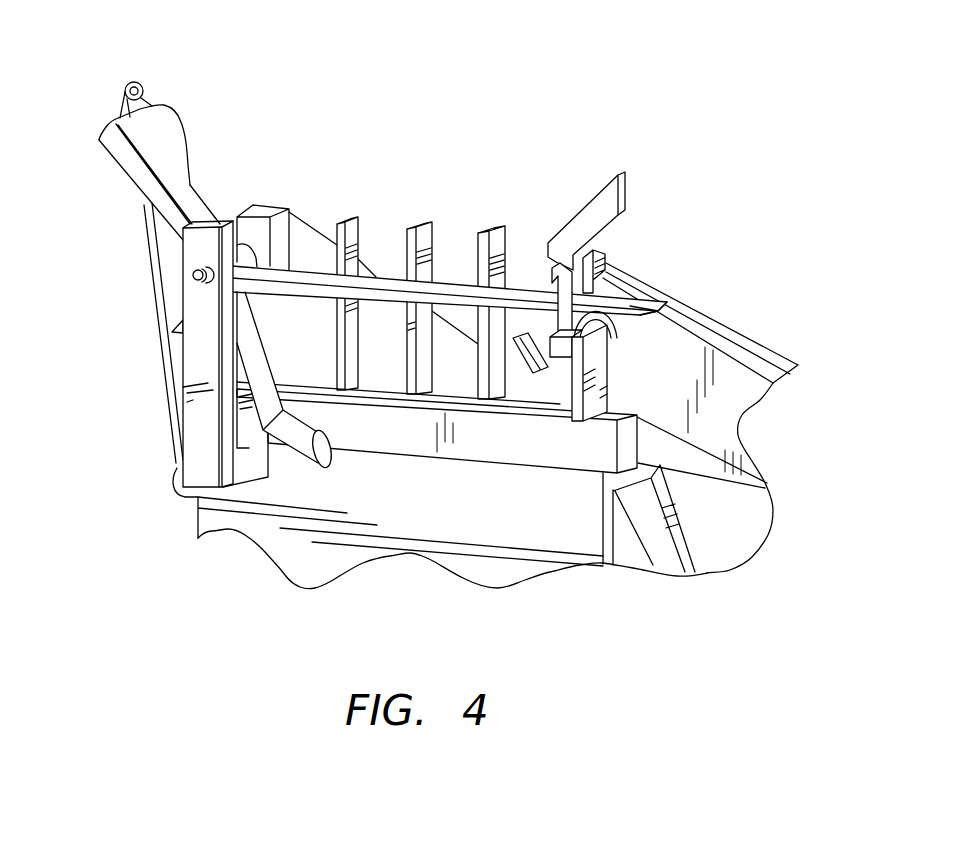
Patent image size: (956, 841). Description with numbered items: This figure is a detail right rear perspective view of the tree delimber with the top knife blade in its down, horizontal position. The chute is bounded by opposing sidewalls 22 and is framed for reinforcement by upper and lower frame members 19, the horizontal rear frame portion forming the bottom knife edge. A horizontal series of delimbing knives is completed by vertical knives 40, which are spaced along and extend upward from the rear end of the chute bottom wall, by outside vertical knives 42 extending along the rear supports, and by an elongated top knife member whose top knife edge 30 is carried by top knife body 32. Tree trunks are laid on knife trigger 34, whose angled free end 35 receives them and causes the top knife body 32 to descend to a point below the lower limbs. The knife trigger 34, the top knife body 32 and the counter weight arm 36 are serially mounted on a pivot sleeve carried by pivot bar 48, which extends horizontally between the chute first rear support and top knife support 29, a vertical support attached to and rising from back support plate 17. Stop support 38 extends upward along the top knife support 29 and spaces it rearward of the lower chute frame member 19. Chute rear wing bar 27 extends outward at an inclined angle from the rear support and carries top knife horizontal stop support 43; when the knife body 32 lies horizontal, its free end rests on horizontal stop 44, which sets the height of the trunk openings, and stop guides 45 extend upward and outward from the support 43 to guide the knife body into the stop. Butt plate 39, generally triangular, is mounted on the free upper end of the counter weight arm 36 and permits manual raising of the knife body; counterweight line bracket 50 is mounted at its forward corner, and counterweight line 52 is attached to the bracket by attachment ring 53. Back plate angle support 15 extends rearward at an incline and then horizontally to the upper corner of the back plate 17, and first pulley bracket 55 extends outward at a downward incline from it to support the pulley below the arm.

The back plate angle support 15 is at (687, 545).
The back support plate 17 is at (520, 576).
The frame member 19 is at (753, 349).
The sidewall 22 is at (440, 371).
The chute rear wing bar 27 is at (602, 207).
The top knife support 29 is at (197, 363).
The top knife edge 30 is at (638, 302).
The top knife body 32 is at (390, 297).
The knife trigger 34 is at (309, 444).
The angled free end 35 is at (262, 362).
The counter weight arm 36 is at (180, 173).
The stop support 38 is at (248, 438).
The butt plate 39 is at (170, 142).
The vertical knives 40 is at (337, 225).
The outside vertical knives 42 is at (287, 332).
The top knife horizontal stop support 43 is at (614, 335).
The horizontal stop 44 is at (600, 352).
The stop guides 45 is at (552, 280).
The pivot bar 48 is at (193, 280).
The counterweight line bracket 50 is at (152, 100).
The counterweight line 52 is at (148, 255).
The attachment ring 53 is at (128, 108).
The first pulley bracket 55 is at (178, 477).